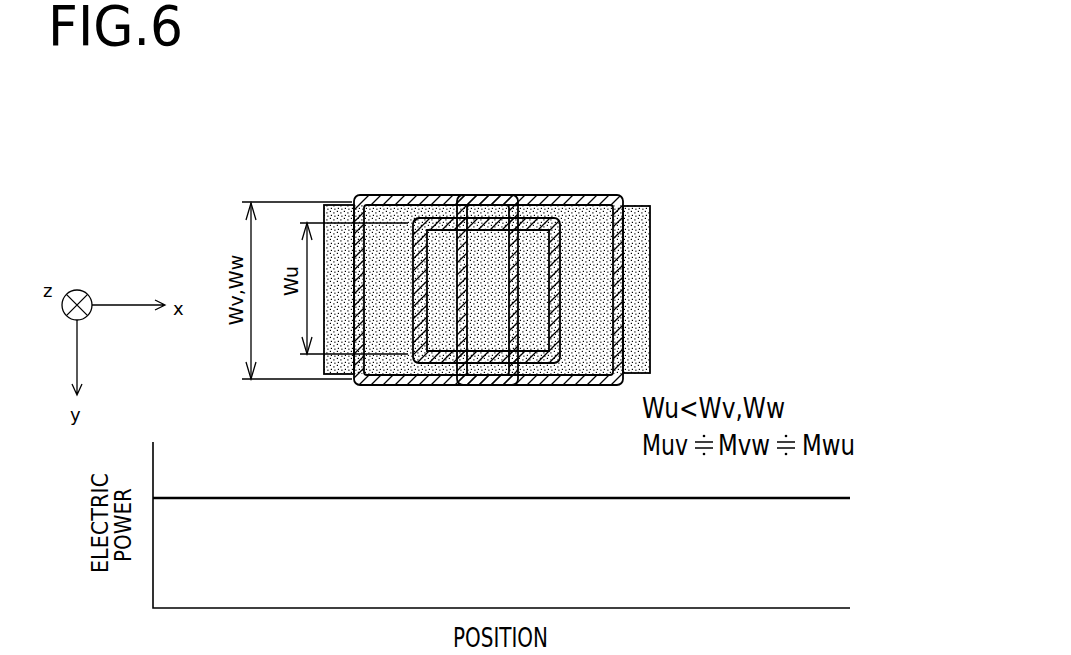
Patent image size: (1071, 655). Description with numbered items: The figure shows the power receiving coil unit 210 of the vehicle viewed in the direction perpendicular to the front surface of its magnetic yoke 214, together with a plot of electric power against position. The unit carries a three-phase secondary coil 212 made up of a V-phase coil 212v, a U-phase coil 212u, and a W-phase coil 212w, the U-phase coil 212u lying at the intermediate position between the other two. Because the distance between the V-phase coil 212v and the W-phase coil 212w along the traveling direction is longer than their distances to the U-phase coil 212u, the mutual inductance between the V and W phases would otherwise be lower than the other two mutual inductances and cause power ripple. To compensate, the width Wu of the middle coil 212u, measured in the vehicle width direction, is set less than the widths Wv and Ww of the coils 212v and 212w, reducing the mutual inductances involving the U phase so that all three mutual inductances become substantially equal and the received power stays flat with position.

The power receiving coil unit 210 is at (543, 217).
The secondary coil 212 is at (479, 217).
The U-phase coil 212u is at (432, 219).
The V-phase coil 212v is at (374, 197).
The W-phase coil 212w is at (540, 246).
The magnetic yoke 214 is at (642, 208).